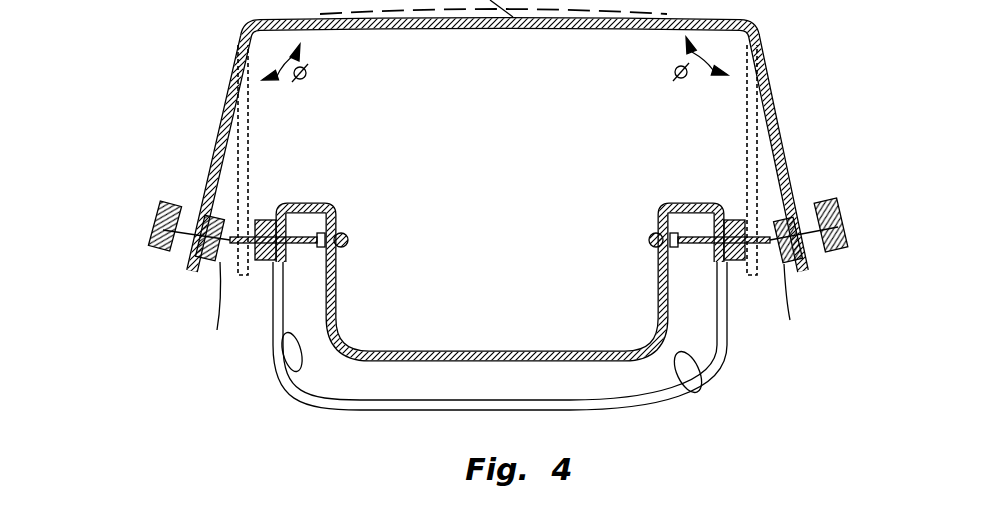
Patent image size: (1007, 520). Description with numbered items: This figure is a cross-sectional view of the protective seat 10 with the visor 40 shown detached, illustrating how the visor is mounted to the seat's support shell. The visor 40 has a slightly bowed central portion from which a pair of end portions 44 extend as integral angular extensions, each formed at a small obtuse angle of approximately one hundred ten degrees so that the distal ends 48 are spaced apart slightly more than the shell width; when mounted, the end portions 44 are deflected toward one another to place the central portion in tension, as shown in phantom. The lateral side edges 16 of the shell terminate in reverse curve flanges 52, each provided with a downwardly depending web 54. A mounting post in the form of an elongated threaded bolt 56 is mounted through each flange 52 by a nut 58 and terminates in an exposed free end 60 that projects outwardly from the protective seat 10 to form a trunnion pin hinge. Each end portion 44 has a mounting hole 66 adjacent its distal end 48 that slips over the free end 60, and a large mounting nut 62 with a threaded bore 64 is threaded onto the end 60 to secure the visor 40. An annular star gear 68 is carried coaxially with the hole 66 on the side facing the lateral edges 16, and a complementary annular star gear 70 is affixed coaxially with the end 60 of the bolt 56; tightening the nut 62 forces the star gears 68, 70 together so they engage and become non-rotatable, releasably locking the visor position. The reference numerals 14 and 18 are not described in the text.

The protective seat 10 is at (496, 353).
The inner tray 14 is at (437, 330).
The lateral side edge portion 16 is at (327, 297).
The right side wall 18 is at (728, 318).
The visor 40 is at (222, 30).
The end portion 44 is at (231, 112).
The distal end 48 is at (189, 272).
The reverse curve flange 52 is at (284, 205).
The downwardly depending web 54 is at (690, 392).
The threaded bolt 56 is at (340, 207).
The nut 58 is at (338, 298).
The exposed free end 60 is at (221, 218).
The mounting nut 62 is at (183, 202).
The threaded bore 64 is at (156, 228).
The mounting hole 66 is at (201, 220).
The annular star gear 68 is at (217, 310).
The complementary annular star gear 70 is at (262, 205).